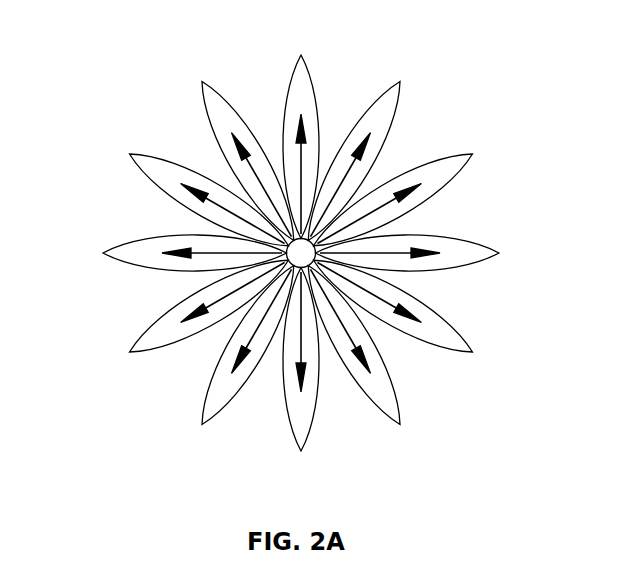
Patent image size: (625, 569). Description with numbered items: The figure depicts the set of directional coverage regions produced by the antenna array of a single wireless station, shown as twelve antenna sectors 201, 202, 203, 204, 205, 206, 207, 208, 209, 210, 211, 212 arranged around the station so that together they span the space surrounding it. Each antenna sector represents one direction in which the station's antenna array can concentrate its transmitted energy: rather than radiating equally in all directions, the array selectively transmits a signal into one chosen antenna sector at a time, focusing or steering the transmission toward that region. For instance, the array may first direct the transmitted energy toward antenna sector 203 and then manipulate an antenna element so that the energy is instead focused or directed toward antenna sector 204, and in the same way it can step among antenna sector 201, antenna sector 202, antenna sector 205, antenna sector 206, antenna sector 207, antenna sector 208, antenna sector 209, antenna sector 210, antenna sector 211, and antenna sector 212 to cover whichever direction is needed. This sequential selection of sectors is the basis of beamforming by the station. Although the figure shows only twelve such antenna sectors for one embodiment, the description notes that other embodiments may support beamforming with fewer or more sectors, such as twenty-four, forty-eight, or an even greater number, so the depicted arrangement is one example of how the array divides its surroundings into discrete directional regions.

The antenna sector 201 is at (303, 58).
The antenna sector 202 is at (403, 82).
The antenna sector 203 is at (473, 155).
The antenna sector 204 is at (493, 247).
The antenna sector 205 is at (473, 350).
The antenna sector 206 is at (397, 425).
The antenna sector 207 is at (302, 452).
The antenna sector 208 is at (203, 425).
The antenna sector 209 is at (130, 350).
The antenna sector 210 is at (102, 257).
The antenna sector 211 is at (130, 155).
The antenna sector 212 is at (205, 83).